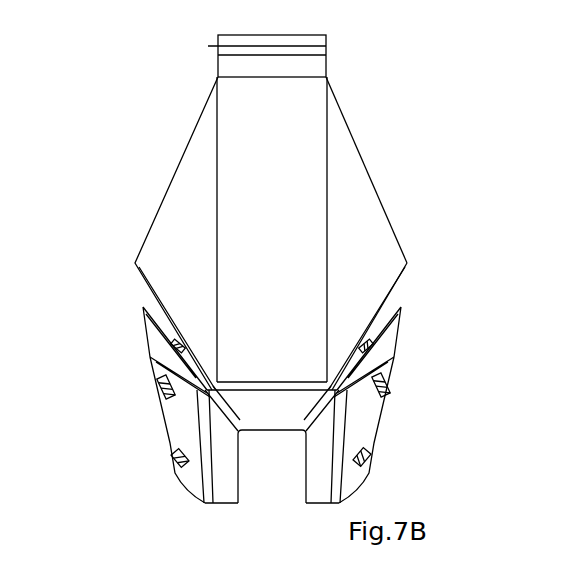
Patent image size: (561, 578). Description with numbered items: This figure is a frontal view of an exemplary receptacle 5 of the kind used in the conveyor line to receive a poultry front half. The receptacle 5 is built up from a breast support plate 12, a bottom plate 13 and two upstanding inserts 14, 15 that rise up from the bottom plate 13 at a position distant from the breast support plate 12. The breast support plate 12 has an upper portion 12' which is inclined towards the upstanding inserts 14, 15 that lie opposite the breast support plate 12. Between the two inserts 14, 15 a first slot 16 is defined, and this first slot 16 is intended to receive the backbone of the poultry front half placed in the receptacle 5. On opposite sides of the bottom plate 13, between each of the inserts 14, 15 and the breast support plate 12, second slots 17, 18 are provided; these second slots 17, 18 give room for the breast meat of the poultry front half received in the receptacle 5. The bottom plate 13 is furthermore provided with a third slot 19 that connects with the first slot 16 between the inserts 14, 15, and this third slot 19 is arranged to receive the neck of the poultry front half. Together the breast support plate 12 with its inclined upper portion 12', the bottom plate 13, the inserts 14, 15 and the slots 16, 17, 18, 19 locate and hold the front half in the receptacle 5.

The receptacle 5 is at (110, 262).
The breast support plate 12 is at (333, 233).
The upper portion 12' is at (325, 47).
The bottom plate 13 is at (288, 406).
The upstanding insert 14 is at (386, 446).
The upstanding insert 15 is at (160, 442).
The first slot 16 is at (246, 491).
The second slot 17 is at (414, 302).
The second slot 18 is at (130, 301).
The third slot 19 is at (274, 462).